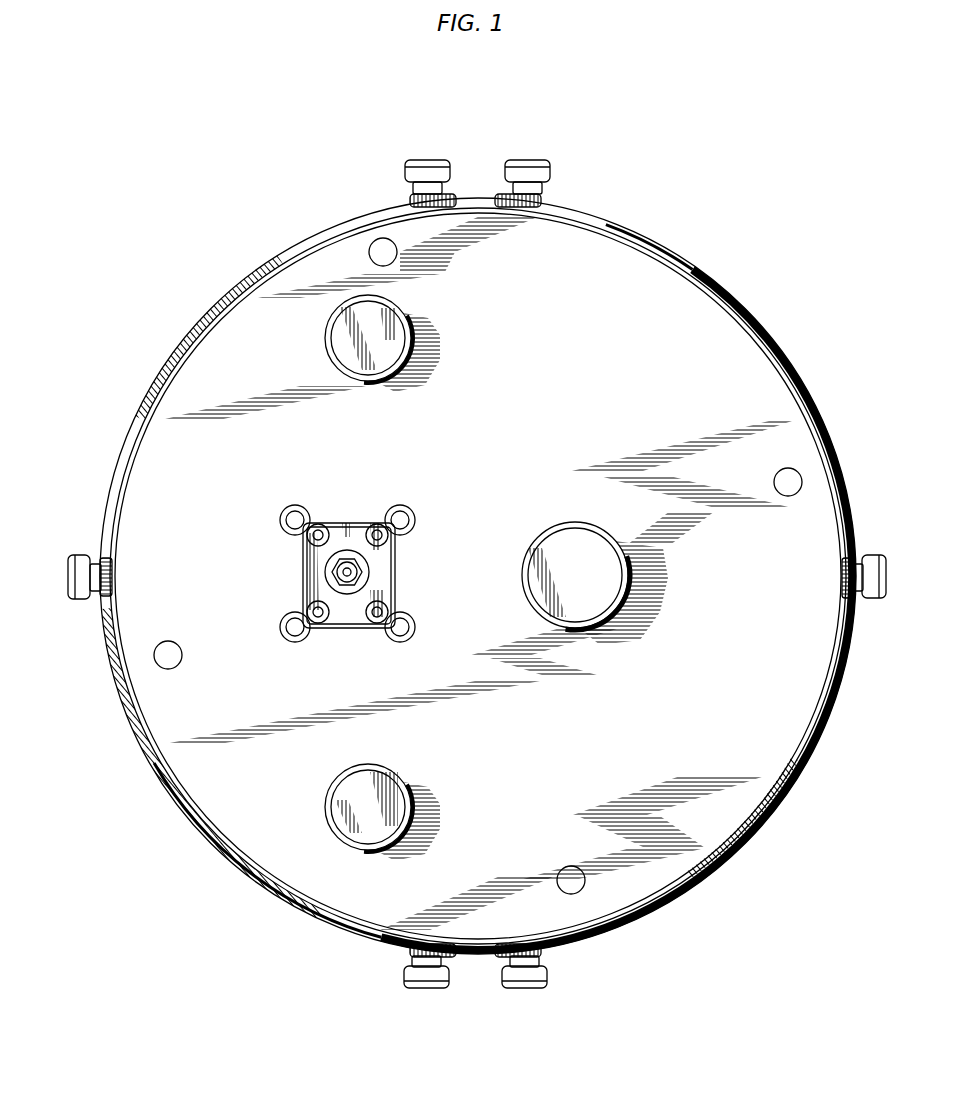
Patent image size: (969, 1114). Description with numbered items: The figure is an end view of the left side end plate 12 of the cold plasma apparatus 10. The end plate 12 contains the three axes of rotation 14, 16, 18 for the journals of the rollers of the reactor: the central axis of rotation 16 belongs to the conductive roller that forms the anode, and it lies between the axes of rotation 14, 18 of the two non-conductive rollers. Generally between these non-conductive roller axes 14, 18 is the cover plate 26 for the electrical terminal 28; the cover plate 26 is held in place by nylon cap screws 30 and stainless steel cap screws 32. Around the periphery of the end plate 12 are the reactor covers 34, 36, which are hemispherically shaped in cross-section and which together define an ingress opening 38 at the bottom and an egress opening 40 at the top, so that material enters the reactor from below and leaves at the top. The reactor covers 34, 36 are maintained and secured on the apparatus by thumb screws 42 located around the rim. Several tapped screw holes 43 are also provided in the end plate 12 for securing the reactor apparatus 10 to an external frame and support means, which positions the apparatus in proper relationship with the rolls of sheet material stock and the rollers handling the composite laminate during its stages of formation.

The cold plasma apparatus 10 is at (686, 203).
The left side end plate 12 is at (727, 352).
The axis of rotation 14 is at (352, 330).
The axis of rotation 16 is at (562, 552).
The axis of rotation 18 is at (348, 823).
The cover plate 26 is at (312, 590).
The electrical terminal 28 is at (340, 570).
The nylon cap screws 30 is at (296, 640).
The stainless steel cap screws 32 is at (325, 622).
The reactor cover 34 is at (790, 765).
The reactor cover 36 is at (130, 700).
The ingress opening 38 is at (477, 954).
The egress opening 40 is at (478, 200).
The thumb screws 42 is at (545, 162).
The tapped screw holes 43 is at (381, 249).